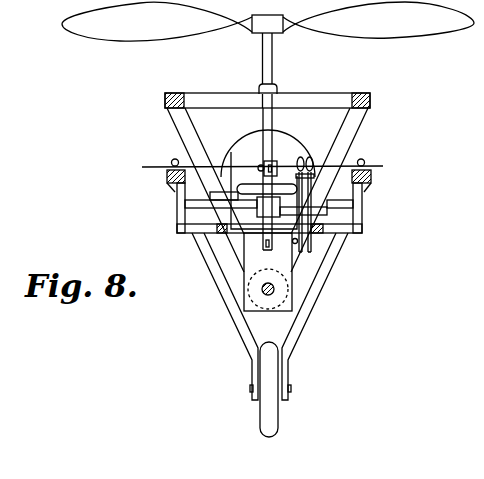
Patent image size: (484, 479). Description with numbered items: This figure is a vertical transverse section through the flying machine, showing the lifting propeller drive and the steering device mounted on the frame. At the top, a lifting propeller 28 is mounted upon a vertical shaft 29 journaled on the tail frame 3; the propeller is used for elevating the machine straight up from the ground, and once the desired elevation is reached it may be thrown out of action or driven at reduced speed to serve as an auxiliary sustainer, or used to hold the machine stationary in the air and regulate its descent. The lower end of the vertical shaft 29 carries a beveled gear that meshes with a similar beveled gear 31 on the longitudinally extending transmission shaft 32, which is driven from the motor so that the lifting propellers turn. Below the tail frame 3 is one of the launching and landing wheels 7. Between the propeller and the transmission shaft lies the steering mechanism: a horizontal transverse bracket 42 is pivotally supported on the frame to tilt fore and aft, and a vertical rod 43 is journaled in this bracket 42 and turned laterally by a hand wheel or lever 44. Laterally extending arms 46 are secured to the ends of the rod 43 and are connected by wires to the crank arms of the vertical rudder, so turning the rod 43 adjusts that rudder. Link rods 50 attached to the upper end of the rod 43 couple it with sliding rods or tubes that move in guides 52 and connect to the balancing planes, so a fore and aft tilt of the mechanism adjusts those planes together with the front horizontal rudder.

The tail frame 3 is at (262, 246).
The launching and landing wheel 7 is at (262, 417).
The lifting propeller 28 is at (146, 41).
The vertical shaft 29 is at (272, 62).
The beveled gear 31 is at (287, 275).
The transmission shaft 32 is at (273, 292).
The horizontal transverse bracket 42 is at (259, 215).
The vertical rod 43 is at (276, 172).
The hand wheel or lever 44 is at (313, 186).
The laterally extending arm 46 is at (218, 193).
The link rod 50 is at (176, 159).
The guide 52 is at (142, 167).